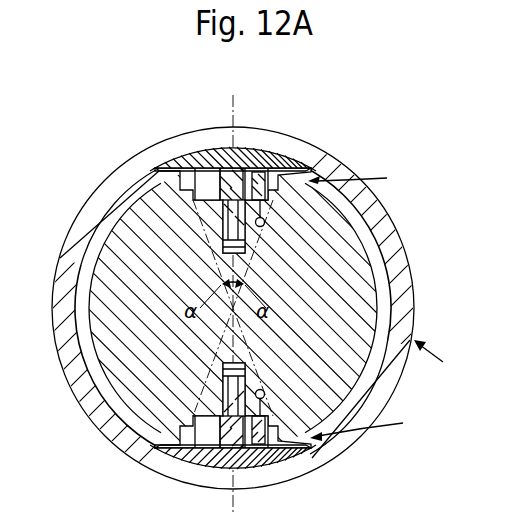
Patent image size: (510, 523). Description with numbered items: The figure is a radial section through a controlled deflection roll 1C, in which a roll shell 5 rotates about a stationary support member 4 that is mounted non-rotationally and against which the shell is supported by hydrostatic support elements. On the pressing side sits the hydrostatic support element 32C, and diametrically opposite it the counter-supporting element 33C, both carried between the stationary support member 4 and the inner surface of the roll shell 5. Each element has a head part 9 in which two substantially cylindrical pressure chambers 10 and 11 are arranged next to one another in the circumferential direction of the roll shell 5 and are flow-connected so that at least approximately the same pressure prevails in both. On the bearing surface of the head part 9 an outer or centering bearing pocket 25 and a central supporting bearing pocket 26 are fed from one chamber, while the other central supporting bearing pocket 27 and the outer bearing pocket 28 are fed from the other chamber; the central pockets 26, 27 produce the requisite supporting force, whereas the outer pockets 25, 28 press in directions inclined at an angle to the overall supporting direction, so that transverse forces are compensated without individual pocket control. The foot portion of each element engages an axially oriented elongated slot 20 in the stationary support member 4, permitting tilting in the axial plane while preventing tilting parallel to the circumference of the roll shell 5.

The controlled deflection roll 1C is at (442, 359).
The stationary support member 4 is at (365, 295).
The roll shell 5 is at (394, 242).
The head part 9 is at (160, 445).
The pressure chamber 10 is at (272, 462).
The pressure chamber 11 is at (207, 464).
The elongated slot 20 is at (250, 366).
The outer bearing pocket 25 is at (302, 453).
The central supporting bearing pocket 26 is at (218, 147).
The central supporting bearing pocket 27 is at (250, 152).
The outer bearing pocket 28 is at (170, 457).
The hydrostatic support element 32C is at (367, 179).
The counter-supporting element 33C is at (376, 427).